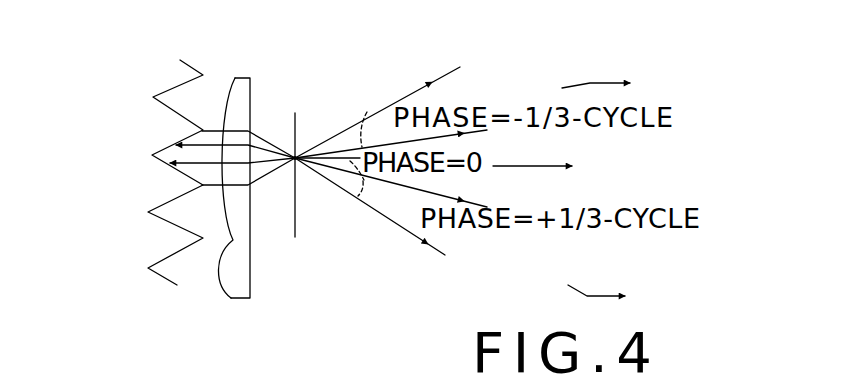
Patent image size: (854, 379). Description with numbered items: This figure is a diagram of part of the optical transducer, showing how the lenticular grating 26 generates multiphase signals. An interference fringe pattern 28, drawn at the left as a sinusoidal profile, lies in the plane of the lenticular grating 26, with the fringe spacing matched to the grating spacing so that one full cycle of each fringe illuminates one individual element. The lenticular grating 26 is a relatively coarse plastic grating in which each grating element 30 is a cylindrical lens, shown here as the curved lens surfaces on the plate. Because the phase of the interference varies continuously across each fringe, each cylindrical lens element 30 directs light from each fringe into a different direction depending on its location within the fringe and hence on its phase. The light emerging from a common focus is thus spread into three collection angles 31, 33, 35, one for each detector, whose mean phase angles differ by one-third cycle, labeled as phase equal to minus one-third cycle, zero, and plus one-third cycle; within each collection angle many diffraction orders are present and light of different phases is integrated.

The lenticular grating 26 is at (263, 72).
The interference fringe pattern 28 is at (151, 186).
The grating element 30 is at (228, 100).
The collection angle 31 is at (367, 112).
The collection angle 33 is at (353, 161).
The collection angle 35 is at (362, 195).